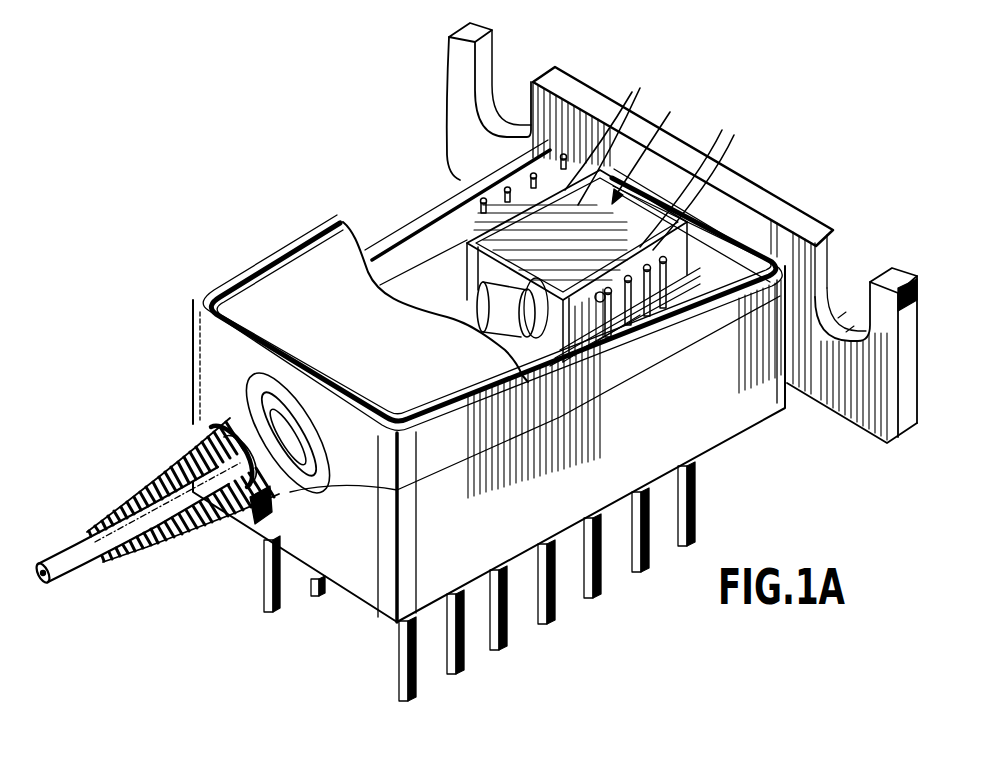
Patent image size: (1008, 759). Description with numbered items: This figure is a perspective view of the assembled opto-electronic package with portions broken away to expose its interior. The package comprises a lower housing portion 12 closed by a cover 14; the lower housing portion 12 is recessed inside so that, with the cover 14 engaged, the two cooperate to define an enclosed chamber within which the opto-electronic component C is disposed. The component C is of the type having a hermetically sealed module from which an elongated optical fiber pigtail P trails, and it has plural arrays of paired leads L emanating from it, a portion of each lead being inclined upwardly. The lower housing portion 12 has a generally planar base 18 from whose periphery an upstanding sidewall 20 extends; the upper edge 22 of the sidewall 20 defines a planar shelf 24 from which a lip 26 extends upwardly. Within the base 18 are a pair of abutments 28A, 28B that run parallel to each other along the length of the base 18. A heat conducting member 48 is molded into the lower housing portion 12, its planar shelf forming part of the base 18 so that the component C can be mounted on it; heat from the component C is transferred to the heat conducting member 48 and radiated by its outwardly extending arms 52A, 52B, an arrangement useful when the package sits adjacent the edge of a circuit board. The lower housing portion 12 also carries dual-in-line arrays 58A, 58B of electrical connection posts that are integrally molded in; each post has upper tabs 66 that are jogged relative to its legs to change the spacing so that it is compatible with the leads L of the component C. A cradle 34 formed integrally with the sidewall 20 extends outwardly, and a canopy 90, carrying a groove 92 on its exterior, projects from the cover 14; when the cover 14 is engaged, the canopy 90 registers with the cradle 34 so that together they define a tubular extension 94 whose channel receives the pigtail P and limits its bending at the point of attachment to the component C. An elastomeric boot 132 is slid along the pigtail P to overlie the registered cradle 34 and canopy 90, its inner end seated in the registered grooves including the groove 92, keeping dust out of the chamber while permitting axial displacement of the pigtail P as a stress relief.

The lower housing portion 12 is at (700, 423).
The cover 14 is at (447, 438).
The base 18 is at (527, 375).
The sidewall 20 is at (590, 367).
The upper edge 22 is at (653, 353).
The planar shelf 24 is at (633, 363).
The lip 26 is at (620, 363).
The abutment 28A is at (437, 277).
The abutment 28B is at (563, 362).
The cradle member 34 is at (248, 512).
The heat conducting member 48 is at (783, 194).
The arm 52A is at (460, 112).
The arm 52B is at (862, 398).
The array of electrical connection posts 58A is at (330, 600).
The array of electrical connection posts 58B is at (683, 570).
The upper tabs 66 is at (533, 175).
The canopy 90 is at (292, 472).
The groove 92 is at (299, 440).
The tubular extension 94 is at (222, 402).
The elastomeric boot 132 is at (143, 540).
The optical fiber pigtail P is at (187, 470).
The leads L is at (653, 155).
The opto-electronic component C is at (649, 145).